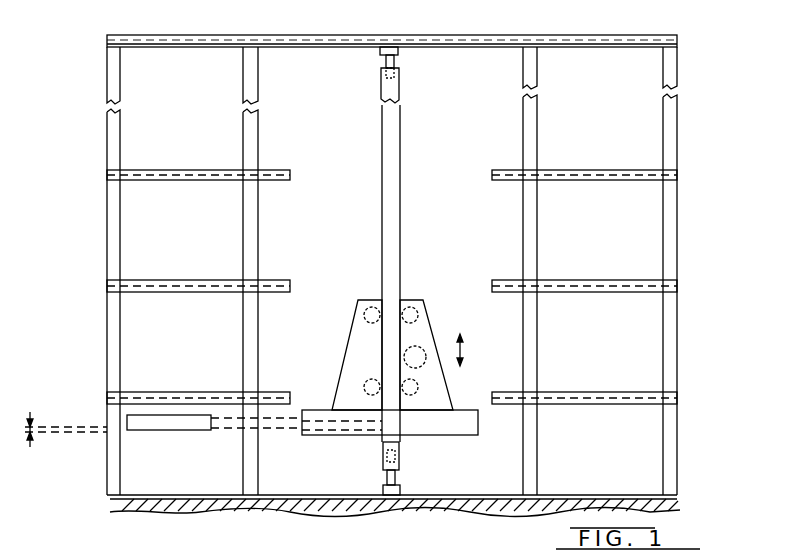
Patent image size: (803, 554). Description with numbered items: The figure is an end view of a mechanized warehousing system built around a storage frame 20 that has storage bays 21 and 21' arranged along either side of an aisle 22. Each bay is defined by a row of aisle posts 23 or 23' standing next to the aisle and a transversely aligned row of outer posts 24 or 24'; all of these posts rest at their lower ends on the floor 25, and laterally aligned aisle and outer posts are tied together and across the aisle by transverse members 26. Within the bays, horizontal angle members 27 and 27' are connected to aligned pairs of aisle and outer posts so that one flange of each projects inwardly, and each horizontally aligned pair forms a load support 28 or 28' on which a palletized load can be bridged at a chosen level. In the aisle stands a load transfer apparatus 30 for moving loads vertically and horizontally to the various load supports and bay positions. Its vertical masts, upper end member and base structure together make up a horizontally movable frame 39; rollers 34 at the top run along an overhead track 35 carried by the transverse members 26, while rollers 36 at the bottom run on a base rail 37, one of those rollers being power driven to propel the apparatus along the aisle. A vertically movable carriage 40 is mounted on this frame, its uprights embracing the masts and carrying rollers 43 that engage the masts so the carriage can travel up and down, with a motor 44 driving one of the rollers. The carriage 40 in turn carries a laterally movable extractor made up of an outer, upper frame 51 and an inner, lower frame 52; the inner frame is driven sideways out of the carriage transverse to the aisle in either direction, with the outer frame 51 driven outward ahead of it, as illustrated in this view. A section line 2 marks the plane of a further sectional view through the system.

The section line 2- 2 is at (486, 445).
The storage frame 20 is at (681, 36).
The storage bay 21 is at (198, 91).
The storage bay 21' is at (584, 91).
The aisle 22 is at (296, 74).
The aisle post 23 is at (270, 271).
The aisle post 23' is at (555, 271).
The outer post 24 is at (132, 271).
The outer post 24' is at (692, 271).
The floor 25 is at (270, 512).
The transverse member 26 is at (425, 46).
The angle member 27 is at (198, 302).
The angle member 27' is at (584, 359).
The load support 28 is at (198, 381).
The load support 28' is at (584, 381).
The load transfer apparatus 30 is at (370, 282).
The wheels or rollers 34 is at (395, 60).
The overhead track or guide 35 is at (400, 50).
The wheels or rollers 36 is at (400, 480).
The base rail or track 37 is at (383, 488).
The horizontally movable frame 39 is at (382, 72).
The carriage 40 is at (312, 410).
The rollers 43 is at (366, 312).
The motor 44 is at (418, 350).
The outer upper frame 51 is at (176, 430).
The inner lower frame 52 is at (338, 436).